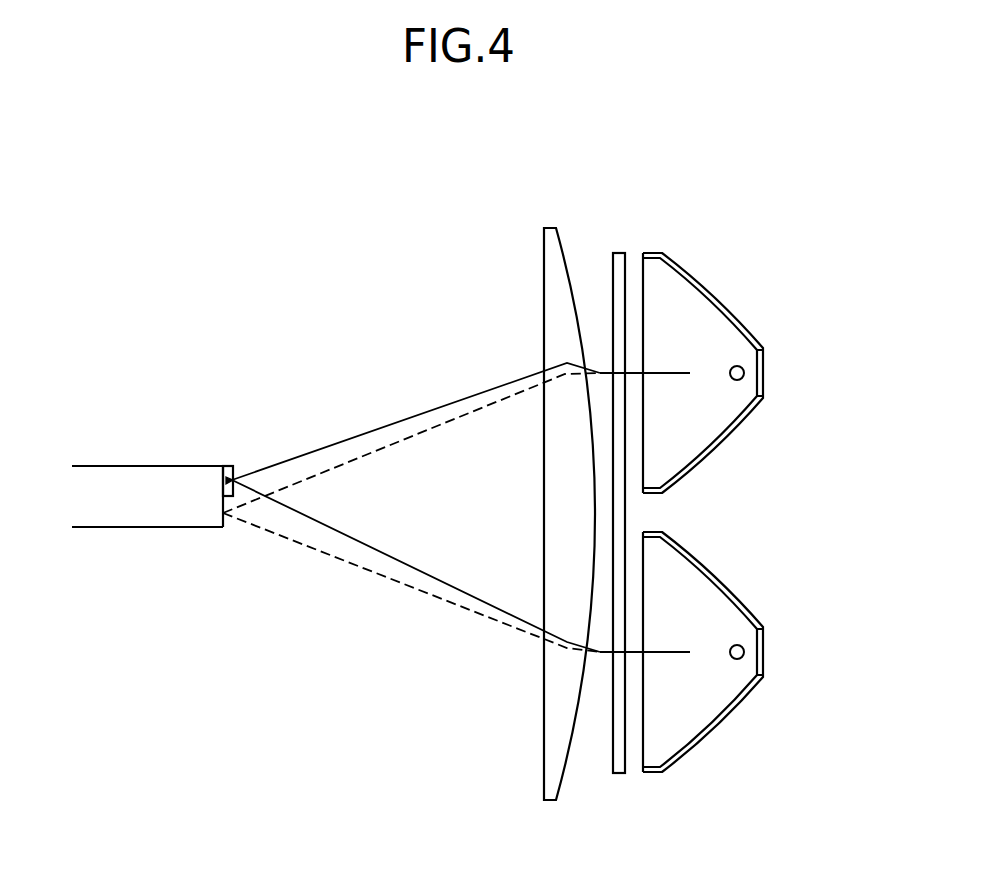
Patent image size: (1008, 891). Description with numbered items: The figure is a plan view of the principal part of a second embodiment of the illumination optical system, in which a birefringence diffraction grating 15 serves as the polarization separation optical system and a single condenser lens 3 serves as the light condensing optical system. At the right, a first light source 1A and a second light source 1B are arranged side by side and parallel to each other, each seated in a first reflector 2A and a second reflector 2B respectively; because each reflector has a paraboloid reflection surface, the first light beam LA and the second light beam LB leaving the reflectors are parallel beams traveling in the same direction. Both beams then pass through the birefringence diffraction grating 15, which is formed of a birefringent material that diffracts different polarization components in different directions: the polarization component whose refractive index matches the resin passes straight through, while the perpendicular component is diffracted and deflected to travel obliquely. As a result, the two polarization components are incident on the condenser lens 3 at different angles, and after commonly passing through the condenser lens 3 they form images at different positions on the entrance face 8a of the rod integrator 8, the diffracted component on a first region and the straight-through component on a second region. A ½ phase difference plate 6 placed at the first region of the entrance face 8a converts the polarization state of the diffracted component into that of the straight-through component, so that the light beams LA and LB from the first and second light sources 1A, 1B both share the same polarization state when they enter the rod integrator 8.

The rod integrator 8 is at (157, 510).
The entrance face 8a is at (223, 527).
The ½ phase difference plate 6 is at (240, 466).
The condenser lens 3 is at (540, 760).
The birefringence diffraction grating 15 is at (610, 767).
The first light beam LA is at (657, 373).
The second light beam LB is at (657, 652).
The first reflector 2A is at (715, 455).
The second reflector 2B is at (715, 732).
The first light source 1A is at (745, 373).
The second light source 1B is at (745, 652).